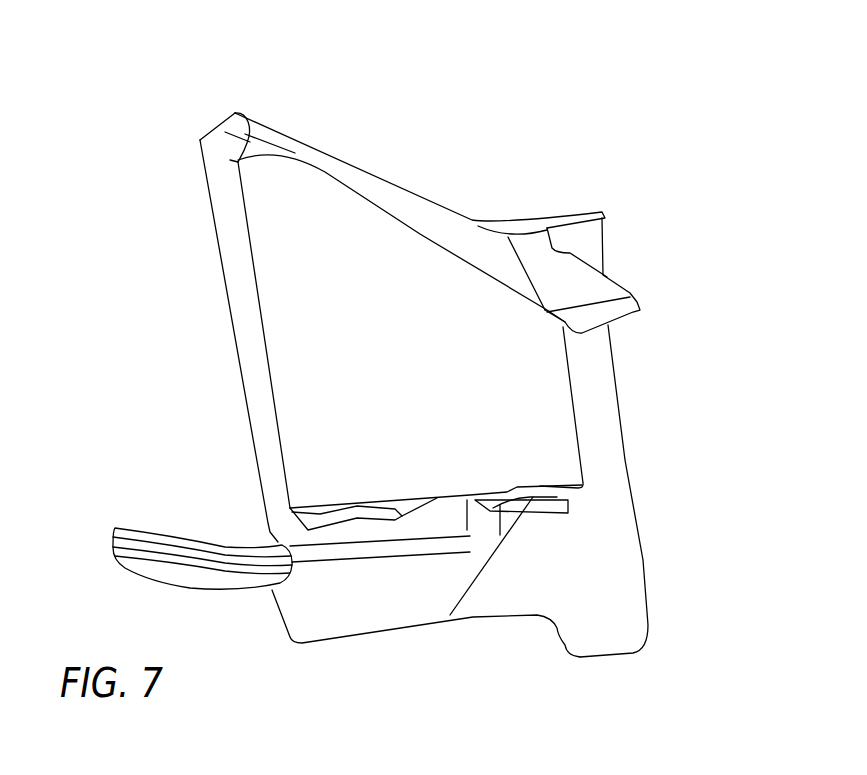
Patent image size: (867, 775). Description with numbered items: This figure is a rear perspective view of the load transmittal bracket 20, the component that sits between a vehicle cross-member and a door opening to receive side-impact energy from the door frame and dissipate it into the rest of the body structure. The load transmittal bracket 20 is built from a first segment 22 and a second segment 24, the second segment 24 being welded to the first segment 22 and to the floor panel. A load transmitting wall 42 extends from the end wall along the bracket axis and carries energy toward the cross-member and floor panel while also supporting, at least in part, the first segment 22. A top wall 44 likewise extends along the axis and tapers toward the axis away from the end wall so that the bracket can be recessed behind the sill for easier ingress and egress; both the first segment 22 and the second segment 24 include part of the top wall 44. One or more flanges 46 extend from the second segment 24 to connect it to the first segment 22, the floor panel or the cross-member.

The load transmittal bracket 20 is at (127, 145).
The first segment 22 is at (605, 555).
The second segment 24 is at (313, 288).
The load transmitting wall 42 is at (428, 315).
The top wall 44 is at (383, 190).
The flanges 46 is at (605, 313).